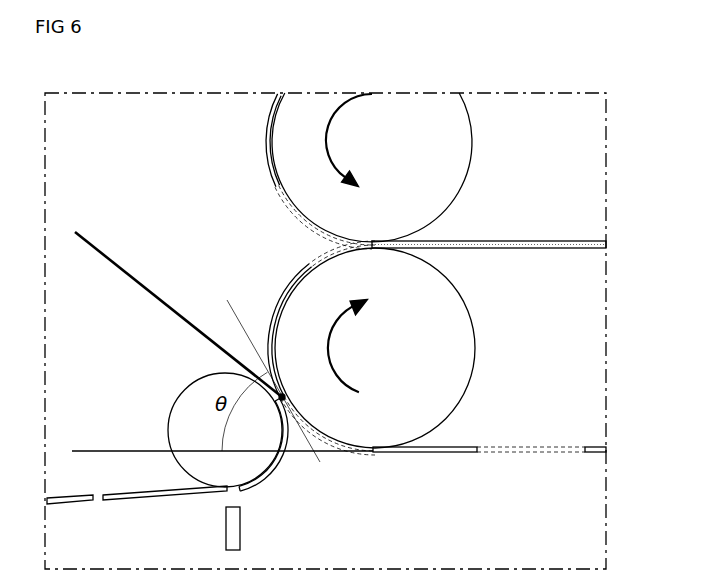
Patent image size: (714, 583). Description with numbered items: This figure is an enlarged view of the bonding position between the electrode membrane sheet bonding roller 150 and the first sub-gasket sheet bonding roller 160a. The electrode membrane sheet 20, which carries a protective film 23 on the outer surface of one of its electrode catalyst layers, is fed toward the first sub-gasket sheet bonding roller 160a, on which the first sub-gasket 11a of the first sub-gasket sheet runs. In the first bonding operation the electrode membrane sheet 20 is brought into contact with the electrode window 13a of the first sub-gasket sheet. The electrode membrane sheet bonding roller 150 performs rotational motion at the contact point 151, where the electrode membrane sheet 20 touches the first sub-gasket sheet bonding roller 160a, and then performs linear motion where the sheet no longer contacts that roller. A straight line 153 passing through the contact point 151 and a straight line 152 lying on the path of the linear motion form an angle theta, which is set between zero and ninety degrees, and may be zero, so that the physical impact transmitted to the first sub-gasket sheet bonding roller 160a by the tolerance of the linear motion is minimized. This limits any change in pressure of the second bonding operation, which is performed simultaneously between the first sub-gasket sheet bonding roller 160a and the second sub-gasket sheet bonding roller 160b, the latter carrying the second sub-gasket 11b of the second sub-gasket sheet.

The first sub-gasket 11a is at (440, 452).
The second sub-gasket 11b is at (270, 158).
The electrode window 13a is at (328, 440).
The electrode membrane sheet 20 is at (262, 487).
The protective film 23 is at (147, 288).
The electrode membrane sheet bonding roller 150 is at (177, 415).
The contact point 151 is at (282, 395).
The straight line on the path of linear motion 152 is at (112, 450).
The straight line including the contact point 153 is at (238, 312).
The first sub-gasket sheet bonding roller 160a is at (456, 352).
The second sub-gasket sheet bonding roller 160b is at (458, 165).